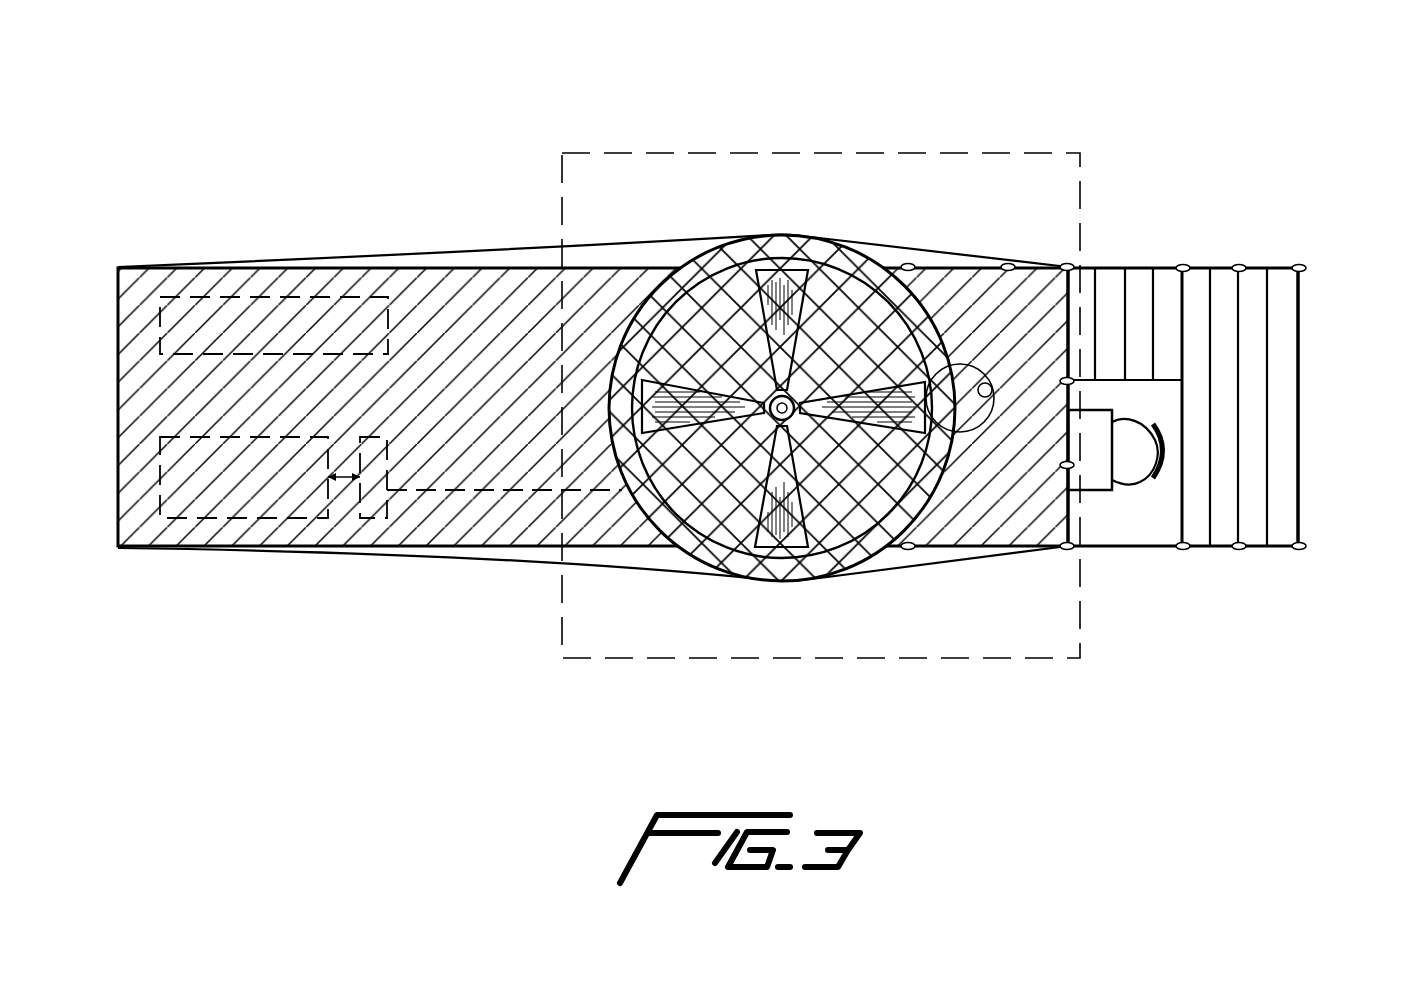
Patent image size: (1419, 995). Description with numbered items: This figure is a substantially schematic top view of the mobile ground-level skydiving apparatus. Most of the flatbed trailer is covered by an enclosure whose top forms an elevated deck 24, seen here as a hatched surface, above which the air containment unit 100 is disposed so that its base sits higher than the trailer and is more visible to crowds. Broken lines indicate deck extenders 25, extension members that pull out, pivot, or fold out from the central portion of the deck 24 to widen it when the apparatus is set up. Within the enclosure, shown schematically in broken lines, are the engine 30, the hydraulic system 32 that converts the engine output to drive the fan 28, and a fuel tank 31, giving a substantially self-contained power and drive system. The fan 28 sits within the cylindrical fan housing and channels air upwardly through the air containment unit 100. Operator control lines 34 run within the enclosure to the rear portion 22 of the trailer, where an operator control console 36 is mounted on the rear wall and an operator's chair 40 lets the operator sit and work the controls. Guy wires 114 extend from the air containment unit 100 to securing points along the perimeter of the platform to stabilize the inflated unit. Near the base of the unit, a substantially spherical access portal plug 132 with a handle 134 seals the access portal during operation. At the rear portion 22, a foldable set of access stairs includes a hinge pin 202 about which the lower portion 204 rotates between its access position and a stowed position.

The rear portion 22 is at (1137, 168).
The elevated deck 24 is at (512, 305).
The deck extenders 25 is at (573, 153).
The fan 28 is at (742, 258).
The engine 30 is at (228, 500).
The fuel tank 31 is at (233, 323).
The hydraulic system 32 is at (368, 507).
The operator control lines 34 is at (472, 490).
The operator control console 36 is at (1100, 492).
The operator's chair 40 is at (1130, 462).
The air containment unit 100 is at (826, 247).
The guy wires 114 is at (427, 253).
The access portal plug 132 is at (967, 372).
The handle 134 is at (1000, 398).
The hinge pin 202 is at (1183, 267).
The lower portion 204 is at (1283, 267).